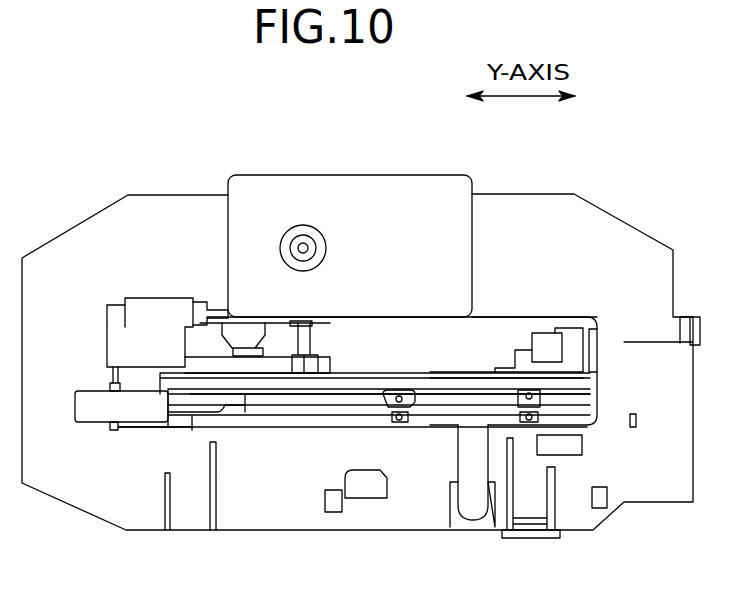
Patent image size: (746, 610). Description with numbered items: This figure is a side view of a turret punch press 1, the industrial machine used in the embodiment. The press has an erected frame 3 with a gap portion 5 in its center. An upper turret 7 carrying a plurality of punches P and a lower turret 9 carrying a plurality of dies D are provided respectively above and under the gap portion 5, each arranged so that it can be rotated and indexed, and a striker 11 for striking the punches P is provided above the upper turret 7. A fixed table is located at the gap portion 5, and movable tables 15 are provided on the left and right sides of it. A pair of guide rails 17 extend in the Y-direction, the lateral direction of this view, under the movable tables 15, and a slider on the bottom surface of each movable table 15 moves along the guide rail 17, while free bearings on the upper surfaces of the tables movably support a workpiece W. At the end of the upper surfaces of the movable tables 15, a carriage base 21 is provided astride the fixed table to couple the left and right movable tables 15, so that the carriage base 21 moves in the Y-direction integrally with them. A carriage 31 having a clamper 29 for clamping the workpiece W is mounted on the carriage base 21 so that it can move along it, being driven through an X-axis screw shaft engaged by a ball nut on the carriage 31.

The turret punch press 1 is at (158, 122).
The frame 3 is at (606, 226).
The gap portion 5 is at (492, 317).
The upper turret 7 is at (193, 362).
The lower turret 9 is at (266, 378).
The striker 11 is at (312, 352).
The movable table 15 is at (352, 388).
The guide rail 17 is at (436, 403).
The carriage base 21 is at (573, 340).
The clamper 29 is at (513, 353).
The carriage 31 is at (545, 352).